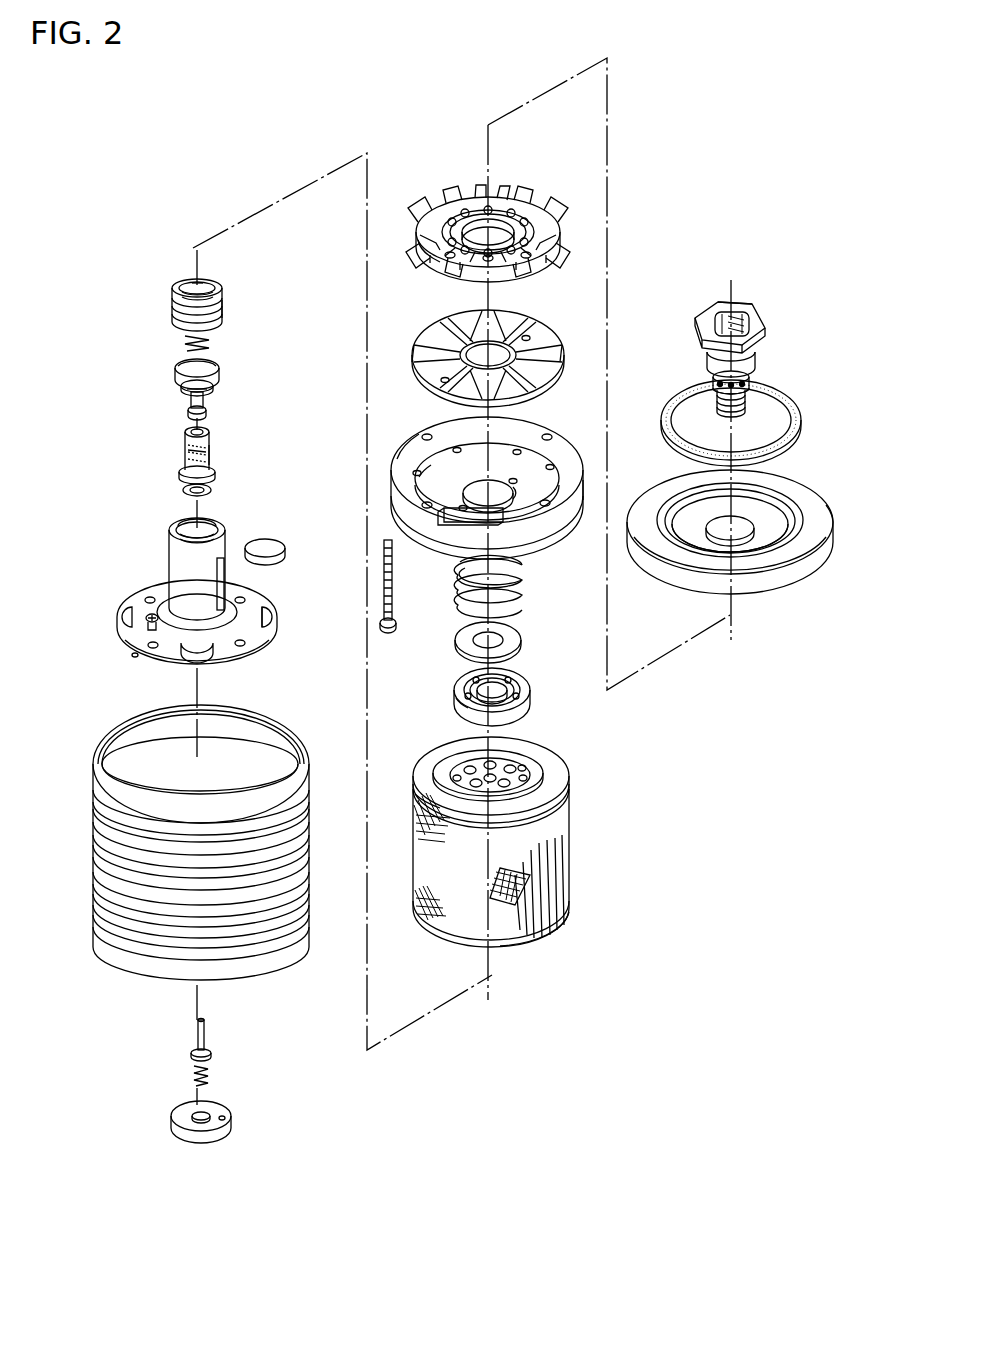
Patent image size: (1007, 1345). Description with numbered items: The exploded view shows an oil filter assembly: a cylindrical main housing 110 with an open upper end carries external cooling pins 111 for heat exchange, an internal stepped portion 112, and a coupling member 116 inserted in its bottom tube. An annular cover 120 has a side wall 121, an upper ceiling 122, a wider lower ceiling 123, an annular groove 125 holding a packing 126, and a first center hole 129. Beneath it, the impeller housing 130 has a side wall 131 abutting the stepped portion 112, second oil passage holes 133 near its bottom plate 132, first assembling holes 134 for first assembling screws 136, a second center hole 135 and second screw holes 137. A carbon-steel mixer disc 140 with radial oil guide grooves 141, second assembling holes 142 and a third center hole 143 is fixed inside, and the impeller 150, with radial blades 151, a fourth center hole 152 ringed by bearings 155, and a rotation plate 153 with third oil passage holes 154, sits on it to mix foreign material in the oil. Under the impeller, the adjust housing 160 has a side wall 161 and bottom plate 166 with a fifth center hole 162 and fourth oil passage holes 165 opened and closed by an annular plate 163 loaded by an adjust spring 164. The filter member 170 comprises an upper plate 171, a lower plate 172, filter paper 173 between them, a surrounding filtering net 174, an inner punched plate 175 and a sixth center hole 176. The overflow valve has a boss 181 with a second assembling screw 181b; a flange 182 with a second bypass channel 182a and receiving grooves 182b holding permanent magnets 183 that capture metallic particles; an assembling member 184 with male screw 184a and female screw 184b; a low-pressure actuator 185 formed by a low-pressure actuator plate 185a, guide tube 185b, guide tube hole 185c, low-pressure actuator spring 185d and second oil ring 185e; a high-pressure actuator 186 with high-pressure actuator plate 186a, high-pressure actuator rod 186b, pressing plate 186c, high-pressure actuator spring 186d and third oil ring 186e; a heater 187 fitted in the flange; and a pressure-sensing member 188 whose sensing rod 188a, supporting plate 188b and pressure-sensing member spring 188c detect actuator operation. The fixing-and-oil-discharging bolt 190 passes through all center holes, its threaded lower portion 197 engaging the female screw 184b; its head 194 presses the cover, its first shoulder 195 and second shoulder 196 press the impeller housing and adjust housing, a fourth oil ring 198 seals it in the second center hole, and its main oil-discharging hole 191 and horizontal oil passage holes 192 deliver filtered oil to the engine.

The main housing 110 is at (103, 866).
The cooling pins 111 is at (150, 935).
The stepped portion 112 is at (120, 760).
The coupling member 116 is at (203, 1140).
The cover 120 is at (818, 505).
The side wall 121 is at (826, 535).
The upper ceiling 122 is at (740, 568).
The lower ceiling 123 is at (762, 560).
The annular groove 125 is at (795, 525).
The packing 126 is at (790, 430).
The first center hole 129 is at (712, 542).
The impeller housing 130 is at (538, 421).
The side wall 131 is at (576, 492).
The bottom plate 132 is at (525, 498).
The second oil passage holes 133 is at (521, 452).
The first assembling holes 134 is at (420, 432).
The second center hole 135 is at (420, 478).
The first assembling screws 136 is at (394, 586).
The second screw holes 137 is at (518, 480).
The mixer disc 140 is at (541, 337).
The oil guide grooves 141 is at (556, 355).
The second assembling holes 142 is at (522, 340).
The third center hole 143 is at (420, 368).
The impeller 150 is at (505, 210).
The blades 151 is at (560, 235).
The fourth center hole 152 is at (476, 215).
The rotation plate 153 is at (440, 290).
The third oil passage holes 154 is at (555, 268).
The bearings 155 is at (520, 212).
The adjust housing 160 is at (456, 655).
The side wall 161 is at (460, 700).
The fifth center hole 162 is at (505, 705).
The annular plate 163 is at (521, 640).
The adjust spring 164 is at (522, 590).
The fourth oil passage holes 165 is at (530, 686).
The bottom plate 166 is at (465, 712).
The filter member 170 is at (562, 815).
The upper plate 171 is at (440, 795).
The lower plate 172 is at (520, 945).
The filter paper 173 is at (568, 880).
The filtering net 174 is at (445, 925).
The punched plate 175 is at (520, 770).
The sixth center hole 176 is at (430, 835).
The boss 181 is at (175, 560).
The second assembling screw 181b is at (180, 526).
The flange 182 is at (255, 640).
The second bypass channel 182a is at (133, 656).
The receiving grooves 182b is at (266, 618).
The permanent magnets 183 is at (270, 540).
The assembling member 184 is at (177, 290).
The male screw 184a is at (222, 310).
The female screw 184b is at (200, 285).
The low-pressure actuator 185 is at (184, 436).
The low-pressure actuator plate 185a is at (180, 474).
The guide tube 185b is at (210, 455).
The guide tube hole 185c is at (205, 433).
The low-pressure actuator spring 185d is at (190, 455).
The second oil ring 185e is at (210, 492).
The high-pressure actuator 186 is at (175, 368).
The high-pressure actuator plate 186a is at (220, 368).
The high-pressure actuator rod 186b is at (190, 399).
The pressing plate 186c is at (188, 414).
The high-pressure actuator spring 186d is at (184, 341).
The third oil ring 186e is at (208, 387).
The heater 187 is at (230, 576).
The pressure-sensing member 188 is at (198, 1025).
The sensing rod 188a is at (205, 1040).
The supporting plate 188b is at (191, 1054).
The pressure-sensing member spring 188c is at (210, 1078).
The fixing-and-oil-discharging bolt 190 is at (752, 308).
The main oil-discharging hole 191 is at (748, 316).
The horizontal oil passage holes 192 is at (714, 383).
The head 194 is at (706, 310).
The first shoulder 195 is at (712, 362).
The second shoulder 196 is at (712, 393).
The bolt thread 197 is at (750, 405).
The fourth oil ring 198 is at (749, 378).